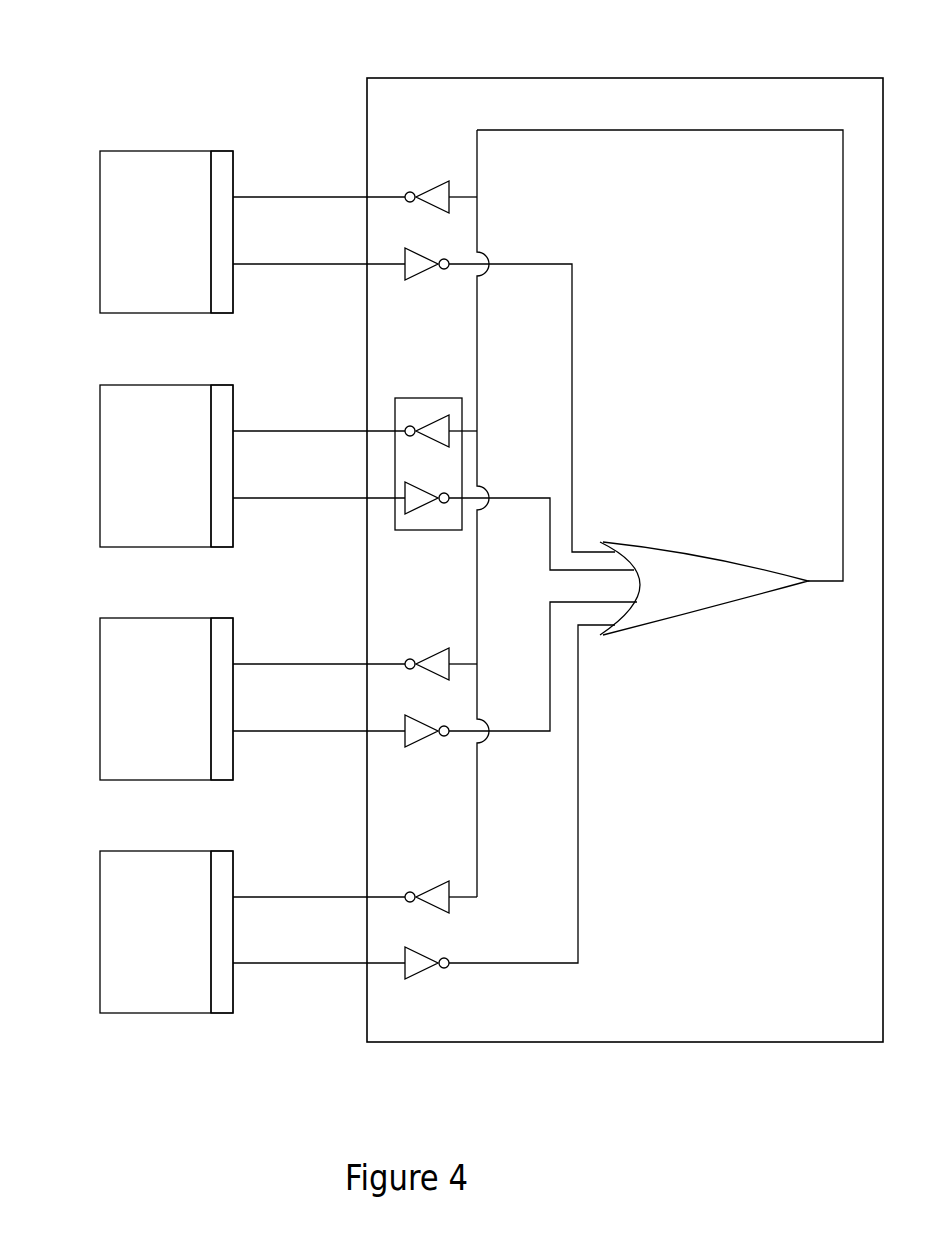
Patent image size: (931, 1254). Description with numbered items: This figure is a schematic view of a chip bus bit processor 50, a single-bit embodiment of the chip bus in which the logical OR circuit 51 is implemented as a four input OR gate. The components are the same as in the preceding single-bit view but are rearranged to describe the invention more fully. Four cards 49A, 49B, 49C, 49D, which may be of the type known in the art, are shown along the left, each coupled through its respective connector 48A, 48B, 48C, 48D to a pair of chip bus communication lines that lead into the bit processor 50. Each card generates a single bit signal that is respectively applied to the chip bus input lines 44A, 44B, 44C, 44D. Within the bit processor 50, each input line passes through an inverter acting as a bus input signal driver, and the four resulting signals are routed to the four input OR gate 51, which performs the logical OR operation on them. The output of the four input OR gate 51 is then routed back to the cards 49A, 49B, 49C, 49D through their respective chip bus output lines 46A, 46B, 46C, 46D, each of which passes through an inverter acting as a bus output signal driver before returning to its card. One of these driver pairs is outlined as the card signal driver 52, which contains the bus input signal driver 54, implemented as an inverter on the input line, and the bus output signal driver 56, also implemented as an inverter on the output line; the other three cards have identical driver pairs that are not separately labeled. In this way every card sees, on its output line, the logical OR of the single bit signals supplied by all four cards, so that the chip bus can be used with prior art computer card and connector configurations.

The chip bus bit processor 50 is at (410, 121).
The logical OR circuit 51 is at (695, 613).
The card signal driver 52 is at (413, 398).
The bus input signal driver 54 is at (425, 508).
The bus output signal driver 56 is at (434, 420).
The card 49A is at (100, 207).
The card 49B is at (100, 441).
The card 49C is at (100, 674).
The card 49D is at (100, 907).
The connector 48A is at (226, 313).
The connector 48B is at (226, 547).
The connector 48C is at (226, 780).
The connector 48D is at (226, 1013).
The chip bus output line 46A is at (284, 197).
The chip bus output line 46B is at (284, 431).
The chip bus output line 46C is at (284, 664).
The chip bus output line 46D is at (284, 897).
The chip bus input line 44A is at (296, 264).
The chip bus input line 44B is at (296, 498).
The chip bus input line 44C is at (296, 731).
The chip bus input line 44D is at (296, 963).